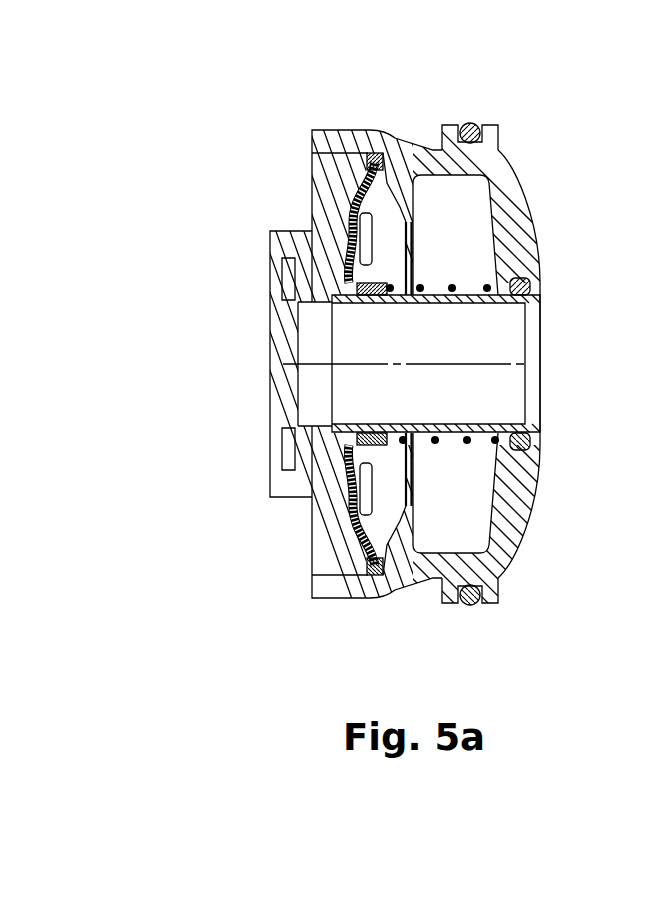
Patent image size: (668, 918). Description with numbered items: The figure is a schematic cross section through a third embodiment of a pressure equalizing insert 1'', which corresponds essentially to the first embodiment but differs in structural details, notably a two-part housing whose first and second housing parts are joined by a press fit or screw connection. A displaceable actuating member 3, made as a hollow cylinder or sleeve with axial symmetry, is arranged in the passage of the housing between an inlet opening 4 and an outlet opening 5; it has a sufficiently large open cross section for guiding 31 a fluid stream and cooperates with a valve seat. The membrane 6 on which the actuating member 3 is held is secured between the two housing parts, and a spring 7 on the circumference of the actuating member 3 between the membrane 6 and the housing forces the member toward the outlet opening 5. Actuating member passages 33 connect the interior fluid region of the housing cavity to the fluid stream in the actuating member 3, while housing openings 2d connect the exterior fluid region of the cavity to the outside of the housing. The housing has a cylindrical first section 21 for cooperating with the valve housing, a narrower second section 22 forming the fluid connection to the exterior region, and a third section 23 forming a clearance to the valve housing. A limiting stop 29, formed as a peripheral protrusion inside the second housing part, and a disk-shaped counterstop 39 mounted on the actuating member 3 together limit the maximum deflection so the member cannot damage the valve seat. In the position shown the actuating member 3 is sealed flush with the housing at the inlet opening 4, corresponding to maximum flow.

The pressure equalizing insert 1'' is at (169, 676).
The housing openings 2d is at (422, 112).
The actuating member 3 is at (440, 305).
The inlet opening 4 is at (582, 328).
The outlet opening 5 is at (218, 355).
The membrane 6 is at (360, 183).
The spring 7 is at (465, 440).
The first section of the housing 21 is at (470, 620).
The second section of the housing 22 is at (416, 616).
The third section of the housing 23 is at (334, 623).
The limiting stop 29 is at (380, 256).
The guiding 31 is at (467, 397).
The actuating member passages 33 is at (330, 298).
The counterstop 39 is at (372, 285).